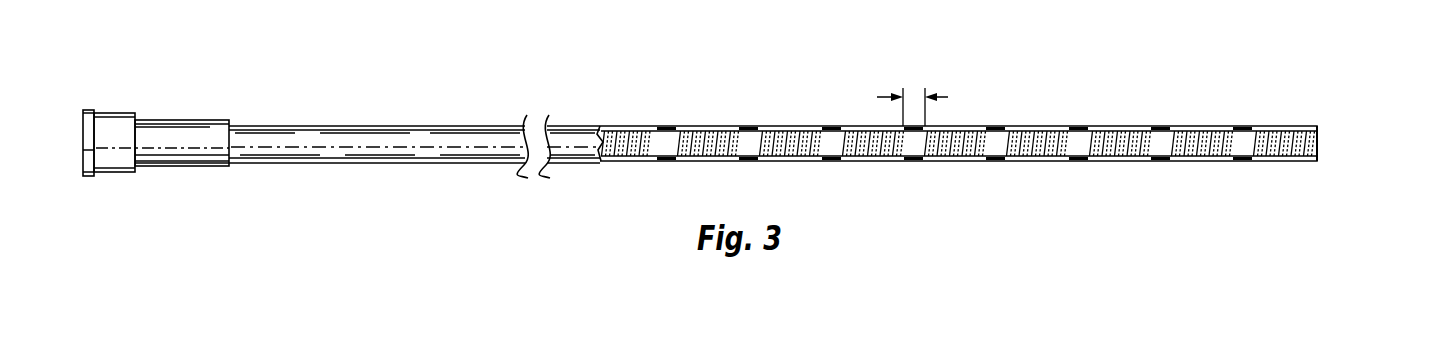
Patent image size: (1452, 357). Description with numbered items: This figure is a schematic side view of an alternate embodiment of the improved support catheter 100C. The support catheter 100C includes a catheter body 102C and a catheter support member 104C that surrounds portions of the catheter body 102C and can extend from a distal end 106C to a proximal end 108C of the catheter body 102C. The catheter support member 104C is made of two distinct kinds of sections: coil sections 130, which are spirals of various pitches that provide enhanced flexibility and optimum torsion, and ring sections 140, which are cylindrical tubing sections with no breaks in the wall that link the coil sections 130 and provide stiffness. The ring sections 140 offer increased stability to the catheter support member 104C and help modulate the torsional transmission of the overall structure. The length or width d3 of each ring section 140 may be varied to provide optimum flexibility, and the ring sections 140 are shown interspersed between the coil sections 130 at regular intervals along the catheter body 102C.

The support catheter 100C is at (343, 118).
The proximal end 108C is at (232, 180).
The catheter support member 104C is at (806, 116).
The catheter body 102C is at (1195, 163).
The coil sections 130 is at (707, 143).
The ring sections 140 is at (748, 162).
The distal end 106C is at (1321, 170).
The length of ring section d3 is at (928, 105).